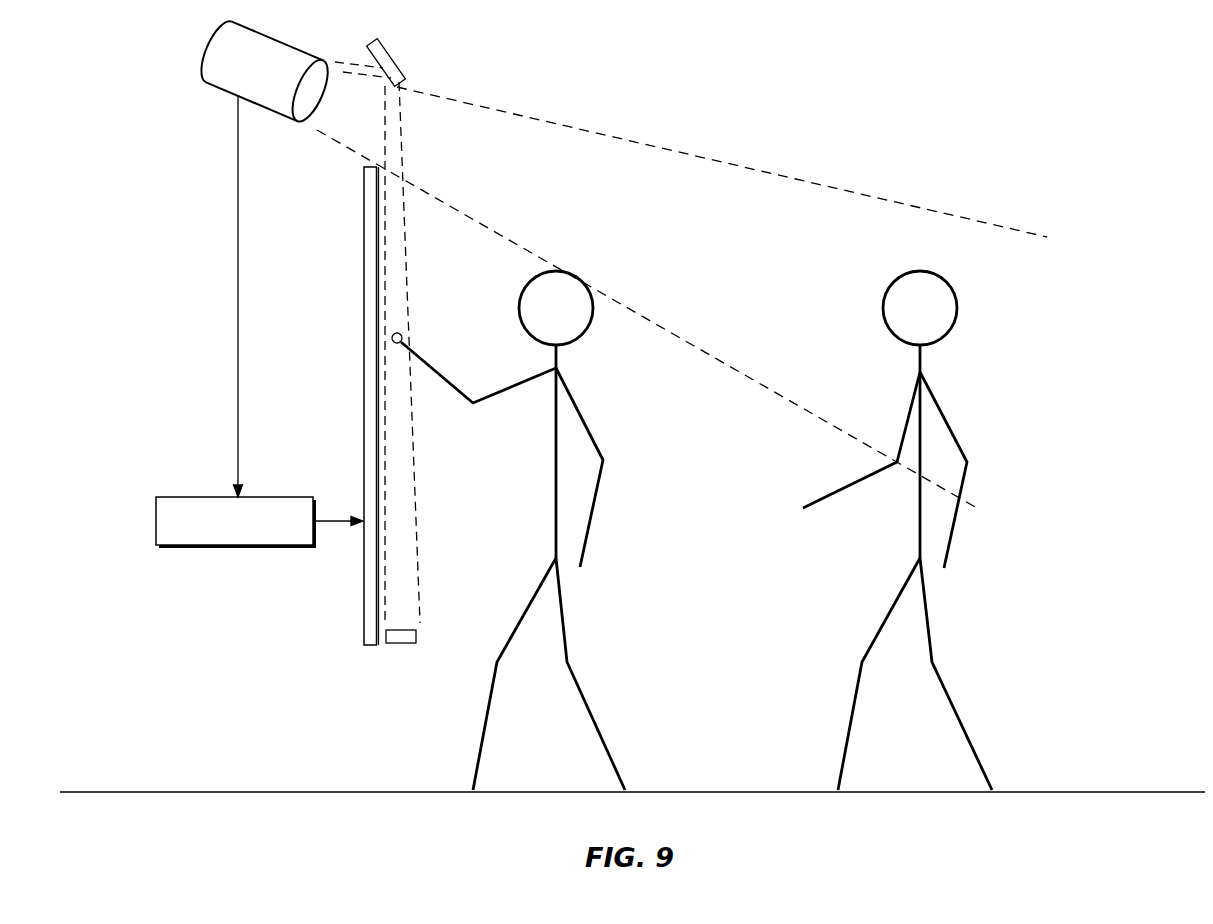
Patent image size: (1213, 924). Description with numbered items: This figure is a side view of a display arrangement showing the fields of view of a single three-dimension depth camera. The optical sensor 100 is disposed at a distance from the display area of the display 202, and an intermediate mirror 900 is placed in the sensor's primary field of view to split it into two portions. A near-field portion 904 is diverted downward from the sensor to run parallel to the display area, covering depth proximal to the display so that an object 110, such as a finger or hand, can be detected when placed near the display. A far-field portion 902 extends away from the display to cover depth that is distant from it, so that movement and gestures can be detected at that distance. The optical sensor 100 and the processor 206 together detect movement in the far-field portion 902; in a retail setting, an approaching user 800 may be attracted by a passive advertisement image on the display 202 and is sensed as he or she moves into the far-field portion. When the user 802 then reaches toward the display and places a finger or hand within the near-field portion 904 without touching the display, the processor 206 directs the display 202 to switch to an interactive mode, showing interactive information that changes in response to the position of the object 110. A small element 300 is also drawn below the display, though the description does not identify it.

The optical sensor 100 is at (250, 26).
The intermediate mirror 900 is at (390, 54).
The far-field portion 902 is at (698, 156).
The near-field portion 904 is at (397, 407).
The display 202 is at (372, 279).
The processor 206 is at (250, 496).
The control device 300 is at (395, 638).
The object 110 is at (398, 333).
The user 802 is at (573, 397).
The approaching user 800 is at (947, 410).